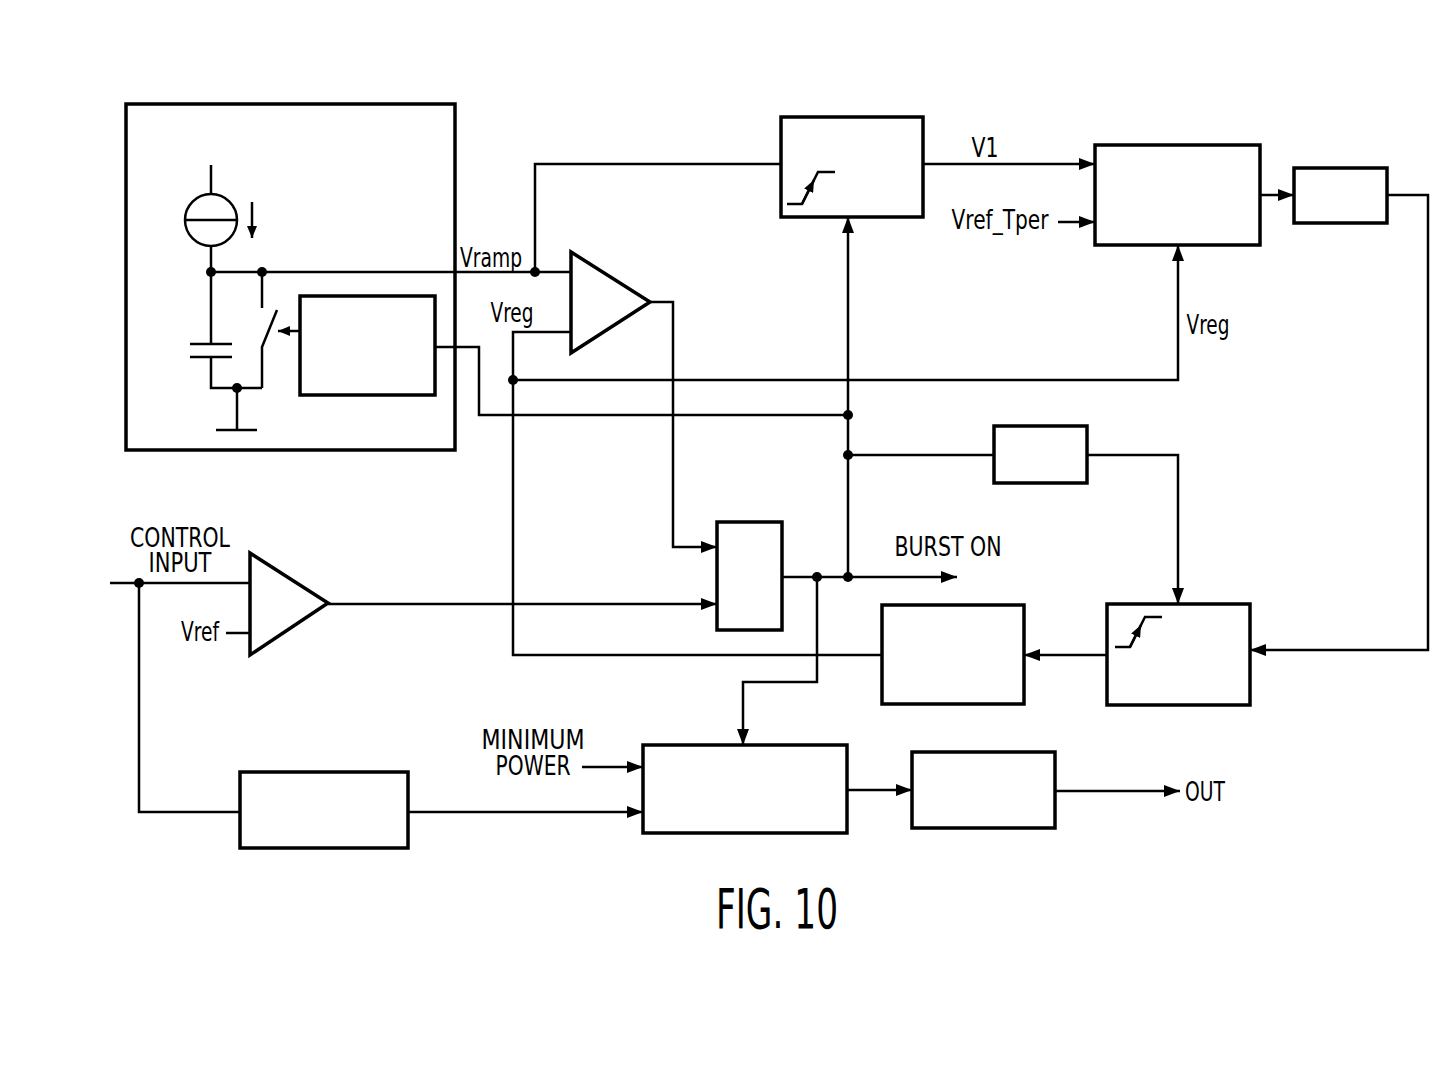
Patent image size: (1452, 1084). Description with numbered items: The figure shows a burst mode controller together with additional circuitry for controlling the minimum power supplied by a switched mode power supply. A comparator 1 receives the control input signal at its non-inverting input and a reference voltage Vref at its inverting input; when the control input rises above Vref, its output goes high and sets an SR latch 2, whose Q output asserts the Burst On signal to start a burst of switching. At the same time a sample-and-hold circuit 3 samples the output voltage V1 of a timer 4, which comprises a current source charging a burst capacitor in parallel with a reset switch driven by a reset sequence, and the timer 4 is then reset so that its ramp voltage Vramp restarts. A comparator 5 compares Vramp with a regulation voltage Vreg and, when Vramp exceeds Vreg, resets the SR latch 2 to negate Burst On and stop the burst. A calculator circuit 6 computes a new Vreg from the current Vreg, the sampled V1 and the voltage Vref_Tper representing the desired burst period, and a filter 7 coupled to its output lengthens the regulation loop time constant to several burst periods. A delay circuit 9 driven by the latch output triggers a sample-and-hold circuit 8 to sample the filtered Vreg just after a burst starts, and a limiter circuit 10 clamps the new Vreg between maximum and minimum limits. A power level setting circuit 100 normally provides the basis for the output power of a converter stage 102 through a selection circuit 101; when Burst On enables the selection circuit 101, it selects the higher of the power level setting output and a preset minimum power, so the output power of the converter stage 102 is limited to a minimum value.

The comparator 1 is at (300, 578).
The SR latch 2 is at (717, 580).
The sample-and-hold circuit 3 is at (810, 218).
The timer 4 is at (455, 155).
The comparator 5 is at (648, 272).
The calculator circuit 6 is at (1135, 245).
The filter 7 is at (1340, 168).
The sample-and-hold circuit 8 is at (1230, 604).
The delay circuit 9 is at (1090, 440).
The limiter circuit 10 is at (1027, 618).
The power level setting circuit 100 is at (312, 772).
The selection circuit 101 is at (672, 745).
The converter stage 102 is at (1055, 818).